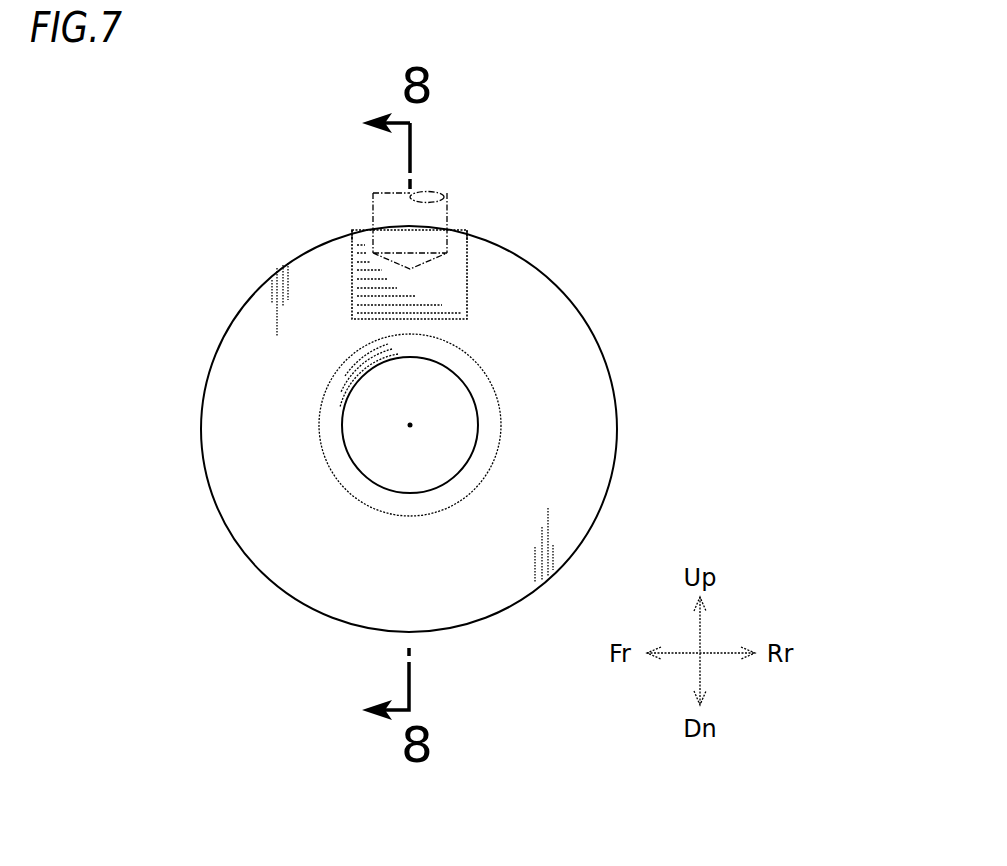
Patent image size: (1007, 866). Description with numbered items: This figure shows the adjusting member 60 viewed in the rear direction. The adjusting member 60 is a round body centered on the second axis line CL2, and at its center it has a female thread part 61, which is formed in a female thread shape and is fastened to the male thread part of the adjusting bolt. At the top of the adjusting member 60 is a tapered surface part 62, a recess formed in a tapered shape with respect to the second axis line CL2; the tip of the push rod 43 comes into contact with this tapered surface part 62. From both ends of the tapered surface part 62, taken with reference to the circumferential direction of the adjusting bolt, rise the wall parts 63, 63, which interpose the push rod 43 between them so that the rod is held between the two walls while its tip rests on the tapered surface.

The push rod 43 is at (435, 192).
The adjusting member 60 is at (622, 266).
The female thread part 61 is at (431, 482).
The tapered surface part 62 is at (437, 281).
The wall parts 63 is at (352, 241).
The second axis line CL2 is at (410, 425).